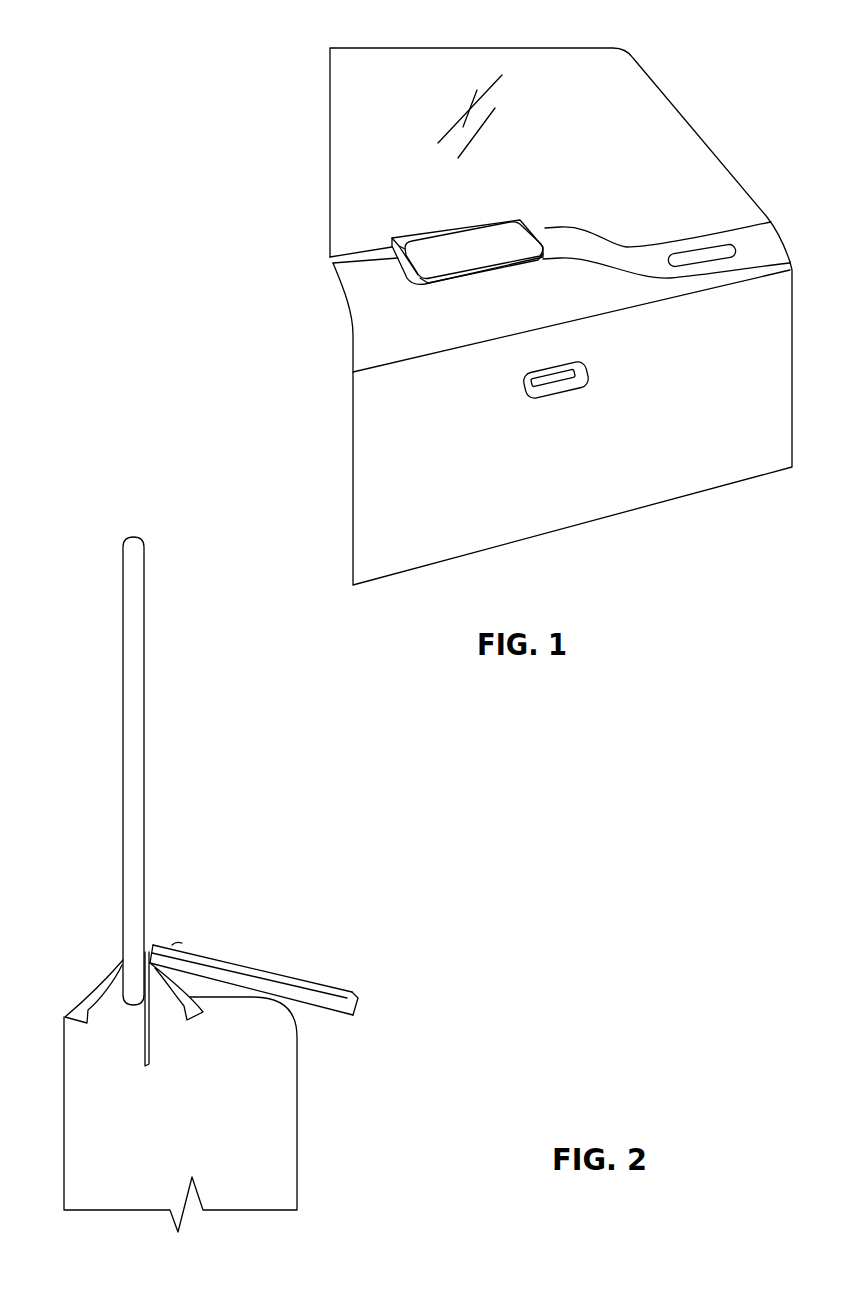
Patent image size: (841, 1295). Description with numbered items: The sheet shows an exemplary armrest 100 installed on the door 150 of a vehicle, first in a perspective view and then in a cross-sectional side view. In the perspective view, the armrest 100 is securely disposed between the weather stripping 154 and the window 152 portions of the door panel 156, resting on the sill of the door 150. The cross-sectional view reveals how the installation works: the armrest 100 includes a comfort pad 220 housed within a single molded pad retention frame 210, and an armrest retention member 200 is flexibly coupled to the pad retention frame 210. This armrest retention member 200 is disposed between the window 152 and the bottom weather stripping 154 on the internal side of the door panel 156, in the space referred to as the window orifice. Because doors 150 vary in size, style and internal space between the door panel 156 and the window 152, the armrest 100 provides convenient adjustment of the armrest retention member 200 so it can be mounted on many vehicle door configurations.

In FIG. 1, the armrest 100 is at (476, 200).
In FIG. 2, the armrest 100 is at (243, 903).
In FIG. 1, the door 150 is at (265, 43).
In FIG. 1, the window 152 is at (662, 121).
In FIG. 2, the window 152 is at (128, 680).
In FIG. 1, the weather stripping 154 is at (332, 262).
In FIG. 2, the weather stripping 154 is at (100, 992).
In FIG. 1, the door panel 156 is at (392, 390).
In FIG. 2, the door panel 156 is at (298, 1098).
In FIG. 2, the armrest retention member 200 is at (145, 1045).
In FIG. 2, the pad retention frame 210 is at (355, 1017).
In FIG. 2, the comfort pad 220 is at (303, 973).